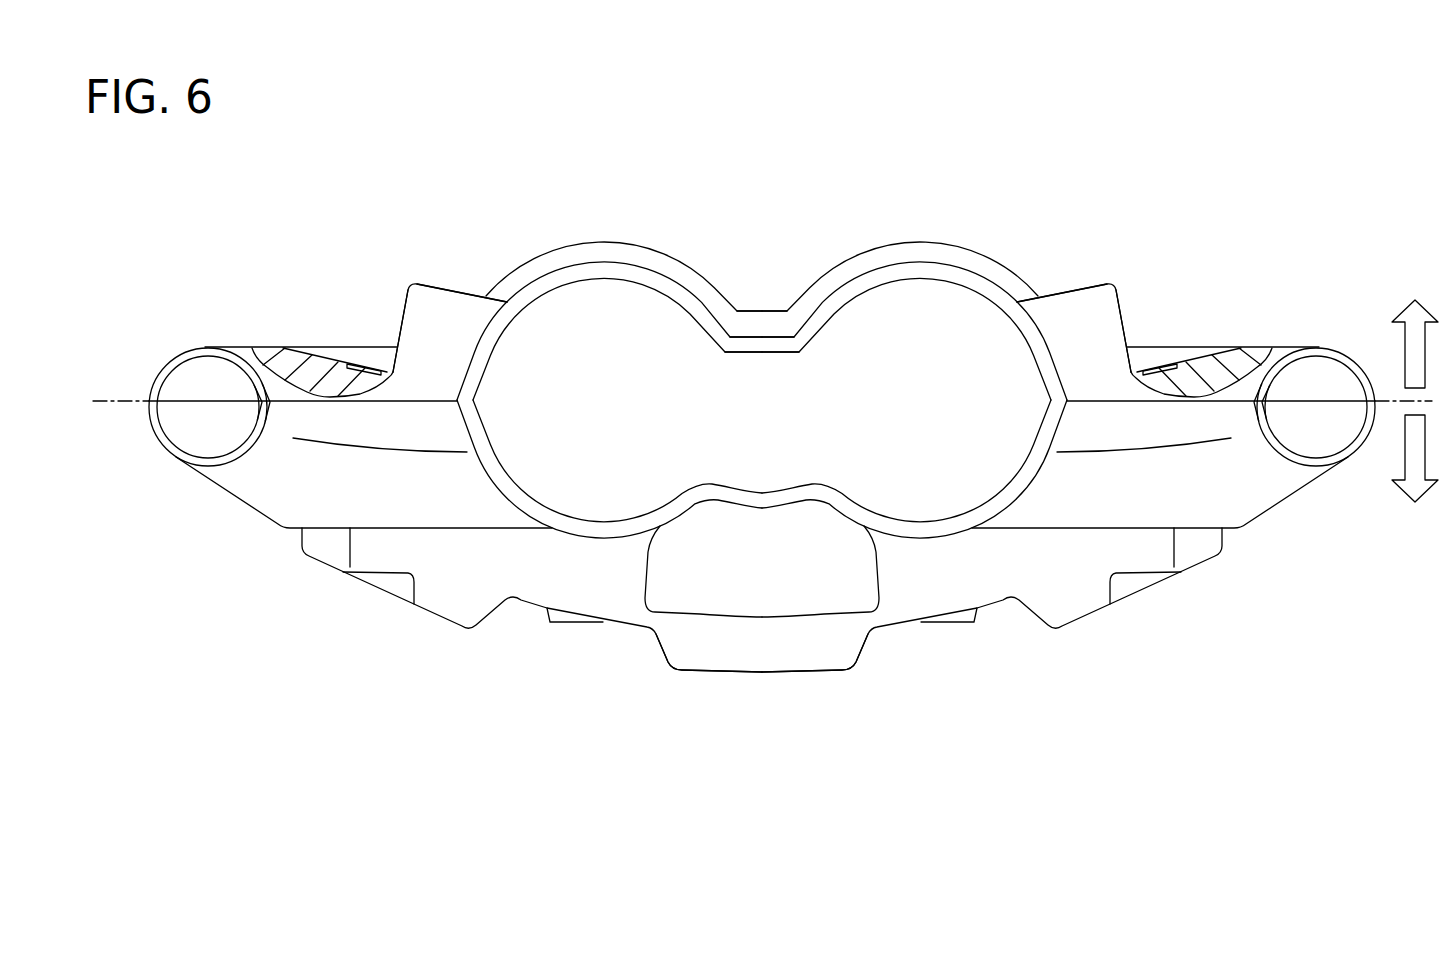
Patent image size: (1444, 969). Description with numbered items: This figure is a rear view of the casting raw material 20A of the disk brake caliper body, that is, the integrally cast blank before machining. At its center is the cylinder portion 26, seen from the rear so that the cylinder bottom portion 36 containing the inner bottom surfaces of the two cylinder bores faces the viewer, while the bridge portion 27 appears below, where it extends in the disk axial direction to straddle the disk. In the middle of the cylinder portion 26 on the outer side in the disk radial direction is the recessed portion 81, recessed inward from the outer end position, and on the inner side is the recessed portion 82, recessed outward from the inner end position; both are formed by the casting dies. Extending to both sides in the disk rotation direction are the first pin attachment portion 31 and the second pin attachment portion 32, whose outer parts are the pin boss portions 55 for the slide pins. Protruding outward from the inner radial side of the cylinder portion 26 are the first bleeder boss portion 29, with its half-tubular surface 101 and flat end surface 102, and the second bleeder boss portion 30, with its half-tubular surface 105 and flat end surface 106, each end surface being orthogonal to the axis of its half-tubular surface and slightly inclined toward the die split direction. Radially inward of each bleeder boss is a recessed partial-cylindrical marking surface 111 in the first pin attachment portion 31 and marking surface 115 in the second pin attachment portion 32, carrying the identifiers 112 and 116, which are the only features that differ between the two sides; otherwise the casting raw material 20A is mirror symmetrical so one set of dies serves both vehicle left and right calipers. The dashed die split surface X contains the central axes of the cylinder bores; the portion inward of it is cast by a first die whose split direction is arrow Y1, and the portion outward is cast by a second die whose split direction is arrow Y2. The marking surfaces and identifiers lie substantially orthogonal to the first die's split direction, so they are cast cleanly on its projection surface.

The casting raw material 20A is at (315, 666).
The cylinder portion 26 is at (891, 318).
The cylinder bottom portion 36 is at (616, 320).
The recessed portion 82 is at (763, 312).
The recessed portion 81 is at (762, 508).
The bridge portion 27 is at (783, 652).
The first bleeder boss portion 29 is at (1085, 306).
The second bleeder boss portion 30 is at (440, 310).
The half-tubular surface 101 is at (1057, 291).
The end surface 102 is at (1125, 315).
The half-tubular surface 105 is at (472, 290).
The end surface 106 is at (399, 313).
The marking surface 111 is at (1188, 353).
The identifier 112 is at (1160, 367).
The marking surface 115 is at (327, 352).
The identifier 116 is at (363, 366).
The first pin attachment portion 31 is at (1280, 490).
The second pin attachment portion 32 is at (253, 490).
The pin boss portion 55 is at (197, 435).
The die split surface X is at (123, 402).
The arrow Y1 is at (1413, 352).
The arrow Y2 is at (1412, 458).